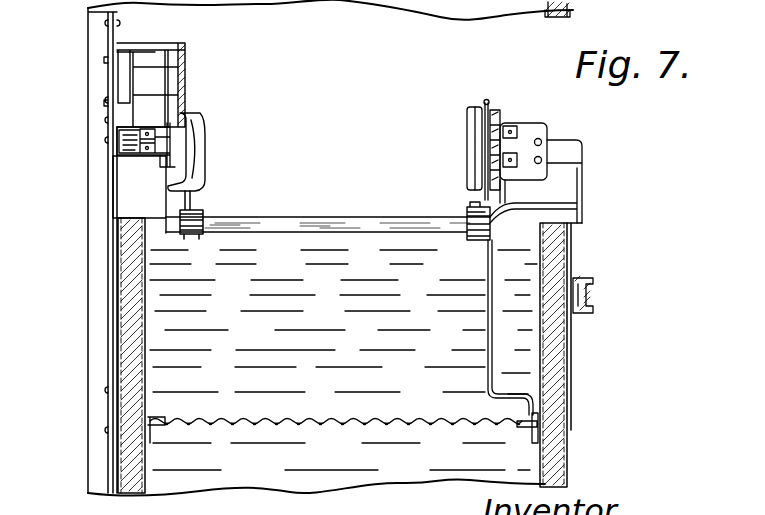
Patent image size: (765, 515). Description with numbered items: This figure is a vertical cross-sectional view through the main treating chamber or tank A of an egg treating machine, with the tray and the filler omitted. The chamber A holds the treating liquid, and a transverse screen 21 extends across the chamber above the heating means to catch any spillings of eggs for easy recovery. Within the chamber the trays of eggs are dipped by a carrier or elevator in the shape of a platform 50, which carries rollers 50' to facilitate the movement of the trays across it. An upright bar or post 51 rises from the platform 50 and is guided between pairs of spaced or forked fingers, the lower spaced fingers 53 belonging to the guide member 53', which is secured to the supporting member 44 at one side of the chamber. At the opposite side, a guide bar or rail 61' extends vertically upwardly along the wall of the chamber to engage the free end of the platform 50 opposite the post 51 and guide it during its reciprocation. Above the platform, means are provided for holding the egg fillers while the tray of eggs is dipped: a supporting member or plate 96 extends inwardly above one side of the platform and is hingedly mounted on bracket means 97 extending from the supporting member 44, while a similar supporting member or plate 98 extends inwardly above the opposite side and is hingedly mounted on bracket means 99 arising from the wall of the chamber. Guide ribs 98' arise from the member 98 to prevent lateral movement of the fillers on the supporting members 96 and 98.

The transverse screen 21 is at (354, 424).
The supporting member 44 is at (95, 152).
The platform 50 is at (328, 212).
The rollers 50' is at (453, 218).
The upright bar or post 51 is at (179, 196).
The lower spaced or forked fingers 53 is at (168, 85).
The lower guide member 53' is at (149, 105).
The guide bar or rail 61' is at (329, 229).
The supporting members or plates 96 is at (196, 146).
The bracket means 97 is at (133, 151).
The supporting members or plates 98 is at (464, 150).
The guide ribs 98' is at (506, 95).
The bracket means 99 is at (552, 148).
The main treating chamber or tank A is at (96, 340).